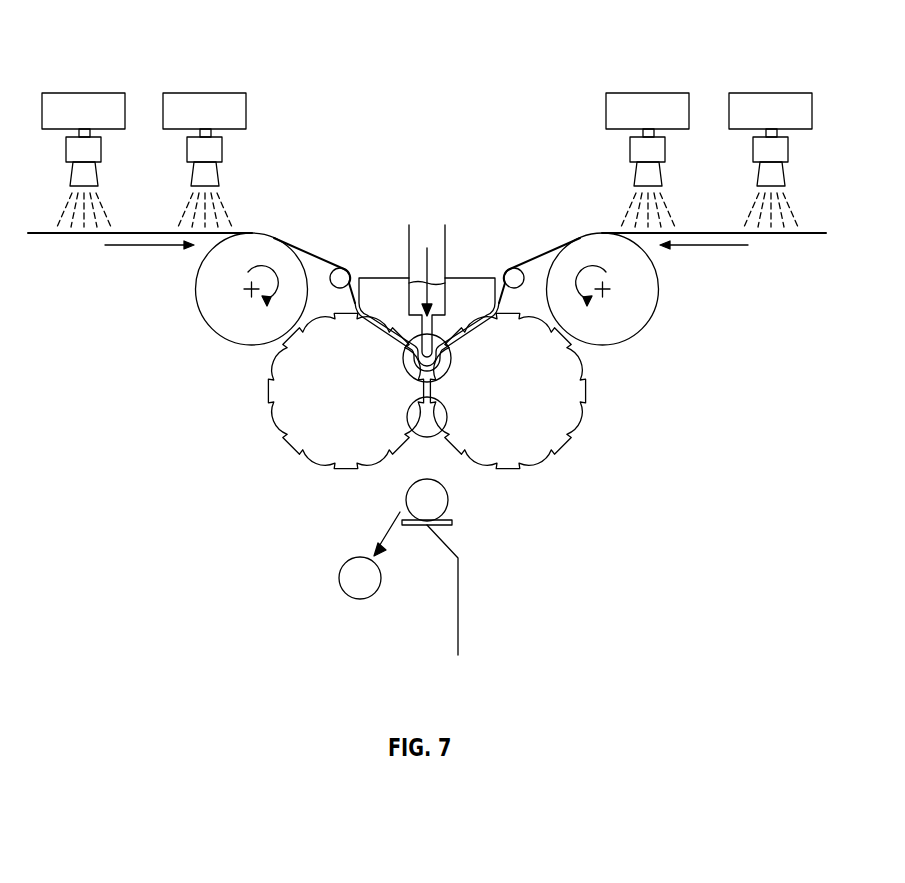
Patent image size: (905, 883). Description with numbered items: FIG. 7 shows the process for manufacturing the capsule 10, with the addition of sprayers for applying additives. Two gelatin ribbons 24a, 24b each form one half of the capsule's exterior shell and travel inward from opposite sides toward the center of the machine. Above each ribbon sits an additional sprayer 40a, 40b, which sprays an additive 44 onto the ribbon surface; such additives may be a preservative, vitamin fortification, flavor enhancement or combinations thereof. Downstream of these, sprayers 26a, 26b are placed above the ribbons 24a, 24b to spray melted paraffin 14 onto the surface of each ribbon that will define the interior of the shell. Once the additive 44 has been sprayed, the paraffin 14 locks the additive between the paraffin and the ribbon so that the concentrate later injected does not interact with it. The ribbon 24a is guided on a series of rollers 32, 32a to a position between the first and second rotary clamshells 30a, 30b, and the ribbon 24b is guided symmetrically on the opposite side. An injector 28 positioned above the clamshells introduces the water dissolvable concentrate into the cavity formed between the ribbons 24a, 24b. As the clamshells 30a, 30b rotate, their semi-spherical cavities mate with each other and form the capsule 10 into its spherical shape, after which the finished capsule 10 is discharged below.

The capsule 10 is at (450, 496).
The melted paraffin 14 is at (668, 208).
The ribbon 24a is at (139, 232).
The ribbon 24b is at (729, 232).
The sprayer 26a is at (209, 101).
The sprayer 26b is at (652, 101).
The injector 28 is at (440, 300).
The first rotary clamshell 30a is at (334, 418).
The second rotary clamshell 30b is at (517, 427).
The roller 32 is at (266, 262).
The roller 32a is at (342, 278).
The additional sprayer 40a is at (86, 101).
The additional sprayer 40b is at (773, 101).
The additive 44 is at (62, 208).